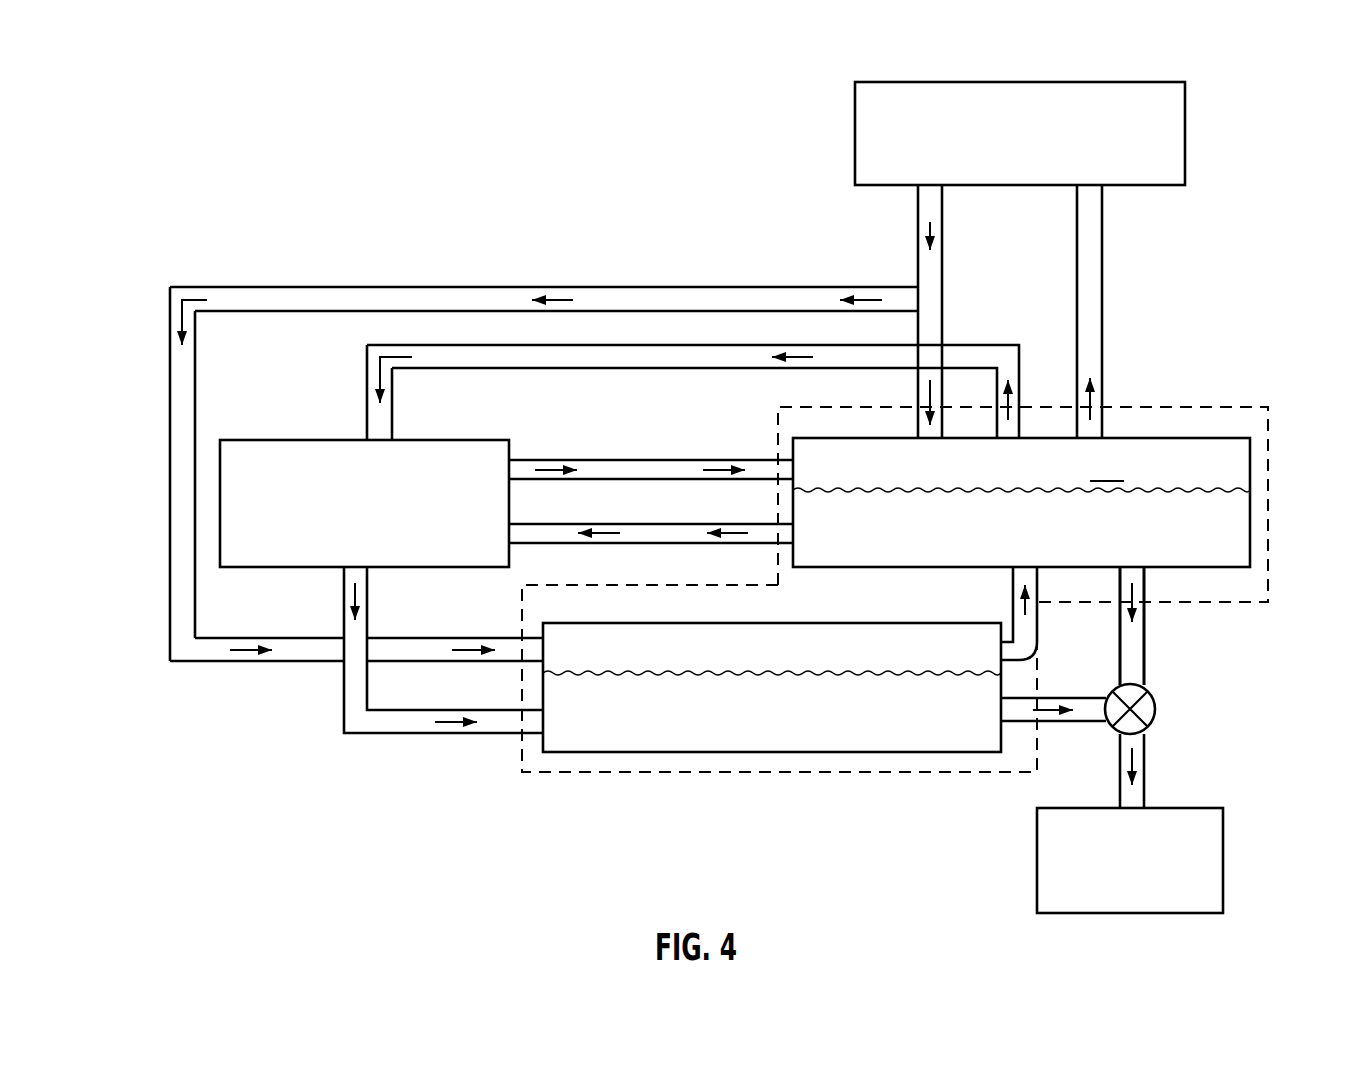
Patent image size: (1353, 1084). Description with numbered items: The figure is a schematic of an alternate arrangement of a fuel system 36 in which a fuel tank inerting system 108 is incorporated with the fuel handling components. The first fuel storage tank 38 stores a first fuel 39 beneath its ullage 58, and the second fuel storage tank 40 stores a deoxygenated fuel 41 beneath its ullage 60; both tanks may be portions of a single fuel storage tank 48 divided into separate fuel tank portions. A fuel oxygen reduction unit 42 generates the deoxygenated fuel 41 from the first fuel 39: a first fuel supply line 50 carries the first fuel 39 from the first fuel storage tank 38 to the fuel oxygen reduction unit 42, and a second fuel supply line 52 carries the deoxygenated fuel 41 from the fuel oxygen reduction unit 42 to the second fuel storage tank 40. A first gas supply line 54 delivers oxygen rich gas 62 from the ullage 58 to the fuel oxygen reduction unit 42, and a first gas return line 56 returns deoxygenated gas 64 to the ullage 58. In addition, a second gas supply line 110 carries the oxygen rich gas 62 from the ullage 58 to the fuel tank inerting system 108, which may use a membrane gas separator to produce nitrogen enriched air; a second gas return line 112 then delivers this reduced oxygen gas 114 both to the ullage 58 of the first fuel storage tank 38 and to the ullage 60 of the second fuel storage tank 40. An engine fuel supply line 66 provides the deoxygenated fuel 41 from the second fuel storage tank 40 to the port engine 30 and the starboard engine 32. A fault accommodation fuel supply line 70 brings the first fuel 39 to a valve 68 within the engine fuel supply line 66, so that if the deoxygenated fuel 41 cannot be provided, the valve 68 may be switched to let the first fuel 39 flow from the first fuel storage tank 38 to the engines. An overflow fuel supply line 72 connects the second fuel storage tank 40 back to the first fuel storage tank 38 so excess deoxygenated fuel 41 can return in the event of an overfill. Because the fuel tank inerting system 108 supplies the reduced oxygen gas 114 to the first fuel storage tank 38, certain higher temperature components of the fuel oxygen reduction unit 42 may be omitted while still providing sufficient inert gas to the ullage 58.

The fuel system 36 is at (565, 148).
The fuel tank inerting system 108 is at (1097, 82).
The second gas supply line 110 is at (1102, 240).
The second gas return line 112 is at (945, 237).
The reduced oxygen gas 114 is at (923, 230).
The oxygen rich gas 62 is at (402, 352).
The fuel oxygen reduction unit 42 is at (275, 440).
The first gas return line 56 is at (700, 460).
The deoxygenated gas 64 is at (550, 470).
The first gas supply line 54 is at (645, 368).
The first fuel supply line 50 is at (672, 546).
The single fuel storage tank 48 is at (1202, 405).
The first fuel storage tank 38 is at (1053, 540).
The ullage 58 is at (1242, 465).
The first fuel 39 is at (733, 530).
The fault accommodation fuel supply line 70 is at (1145, 643).
The valve 68 is at (1155, 708).
The engine fuel supply line 66 is at (1145, 750).
The deoxygenated fuel 41 is at (353, 605).
The second fuel supply line 52 is at (373, 733).
The overflow fuel supply line 72 is at (1015, 583).
The second fuel storage tank 40 is at (779, 705).
The ullage 60 is at (662, 632).
The port engine 30 is at (1130, 882).
The starboard engine 32 is at (1120, 913).